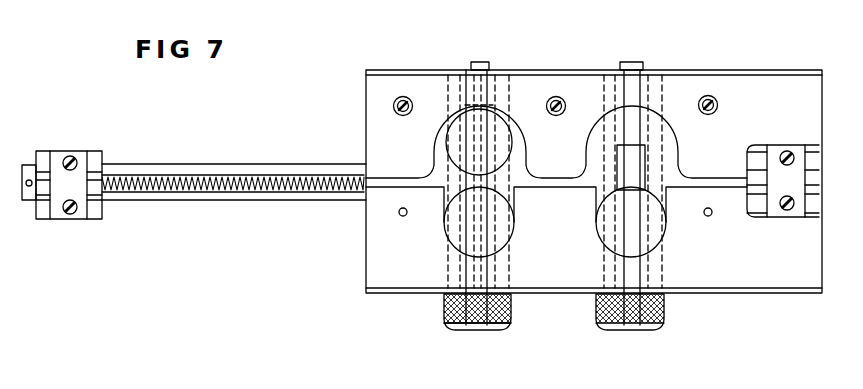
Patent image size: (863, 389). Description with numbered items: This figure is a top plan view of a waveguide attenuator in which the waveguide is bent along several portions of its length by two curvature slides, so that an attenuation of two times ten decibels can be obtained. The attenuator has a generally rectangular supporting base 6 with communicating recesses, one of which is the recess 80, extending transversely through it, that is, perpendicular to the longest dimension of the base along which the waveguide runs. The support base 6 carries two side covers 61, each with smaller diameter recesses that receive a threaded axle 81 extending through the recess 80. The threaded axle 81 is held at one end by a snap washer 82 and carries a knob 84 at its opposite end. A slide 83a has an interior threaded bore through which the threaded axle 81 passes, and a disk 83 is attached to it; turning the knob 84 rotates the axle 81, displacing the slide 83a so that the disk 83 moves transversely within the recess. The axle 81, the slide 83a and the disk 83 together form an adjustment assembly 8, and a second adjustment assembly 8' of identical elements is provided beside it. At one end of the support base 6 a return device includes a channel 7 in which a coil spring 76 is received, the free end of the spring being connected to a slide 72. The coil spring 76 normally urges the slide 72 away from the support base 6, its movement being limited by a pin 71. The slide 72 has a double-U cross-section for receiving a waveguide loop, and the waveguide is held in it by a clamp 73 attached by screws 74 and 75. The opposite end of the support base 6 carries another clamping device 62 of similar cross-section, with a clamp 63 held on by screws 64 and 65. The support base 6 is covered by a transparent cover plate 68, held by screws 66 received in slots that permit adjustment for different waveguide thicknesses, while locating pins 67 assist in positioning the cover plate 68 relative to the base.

The supporting base 6 is at (372, 255).
The channel 7 is at (230, 198).
The adjustment assembly 8 is at (478, 350).
The adjustment assembly 8' is at (632, 220).
The side cover 61 is at (378, 71).
The clamping device 62 is at (757, 208).
The clamp 63 is at (782, 150).
The screw 64 is at (794, 158).
The screw 65 is at (785, 207).
The screw 66 is at (394, 106).
The locating pin 67 is at (398, 212).
The cover plate 68 is at (582, 93).
The pin 71 is at (30, 195).
The slide 72 is at (40, 210).
The clamp 73 is at (59, 153).
The screw 74 is at (74, 157).
The screw 75 is at (75, 213).
The coil spring 76 is at (147, 190).
The recess 80 is at (505, 215).
The threaded axle 81 is at (468, 72).
The snap washer 82 is at (488, 72).
The disk 83 is at (452, 136).
The slide 83a is at (463, 185).
The knob 84 is at (443, 315).